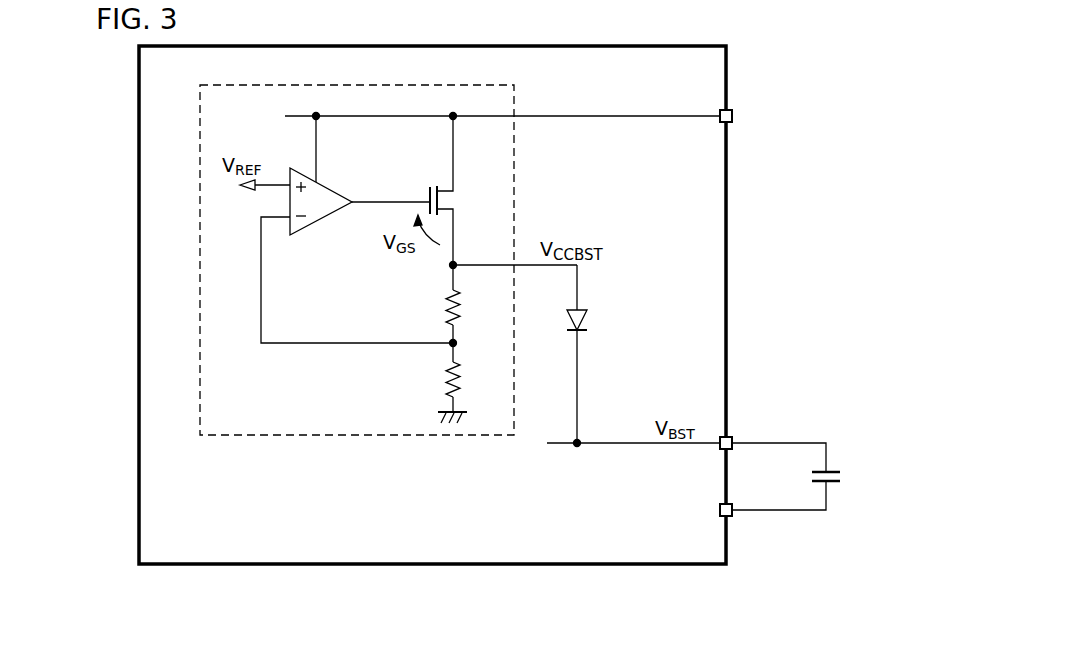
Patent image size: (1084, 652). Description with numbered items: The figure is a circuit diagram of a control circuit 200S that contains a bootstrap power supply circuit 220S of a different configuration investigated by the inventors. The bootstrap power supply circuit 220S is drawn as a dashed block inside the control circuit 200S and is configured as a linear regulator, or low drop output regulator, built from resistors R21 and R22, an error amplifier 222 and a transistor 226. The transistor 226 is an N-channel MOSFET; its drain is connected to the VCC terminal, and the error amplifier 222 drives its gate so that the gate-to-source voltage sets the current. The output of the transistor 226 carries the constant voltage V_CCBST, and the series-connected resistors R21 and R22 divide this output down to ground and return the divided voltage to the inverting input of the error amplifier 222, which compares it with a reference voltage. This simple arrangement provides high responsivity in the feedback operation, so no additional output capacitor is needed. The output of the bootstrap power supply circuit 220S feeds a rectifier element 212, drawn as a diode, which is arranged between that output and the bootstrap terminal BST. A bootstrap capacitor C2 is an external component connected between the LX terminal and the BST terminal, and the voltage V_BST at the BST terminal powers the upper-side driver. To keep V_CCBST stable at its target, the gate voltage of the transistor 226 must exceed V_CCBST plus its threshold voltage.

The control circuit 200S is at (383, 566).
The bootstrap power supply circuit 220S is at (322, 437).
The error amplifier 222 is at (324, 240).
The transistor 226 is at (432, 182).
The rectifier element 212 is at (591, 318).
The resistor R21 is at (440, 305).
The resistor R22 is at (440, 377).
The bootstrap capacitor C2 is at (845, 475).
The VCC terminal VCC is at (758, 90).
The bootstrap (BST) terminal BST is at (758, 420).
The LX terminal LX is at (734, 520).